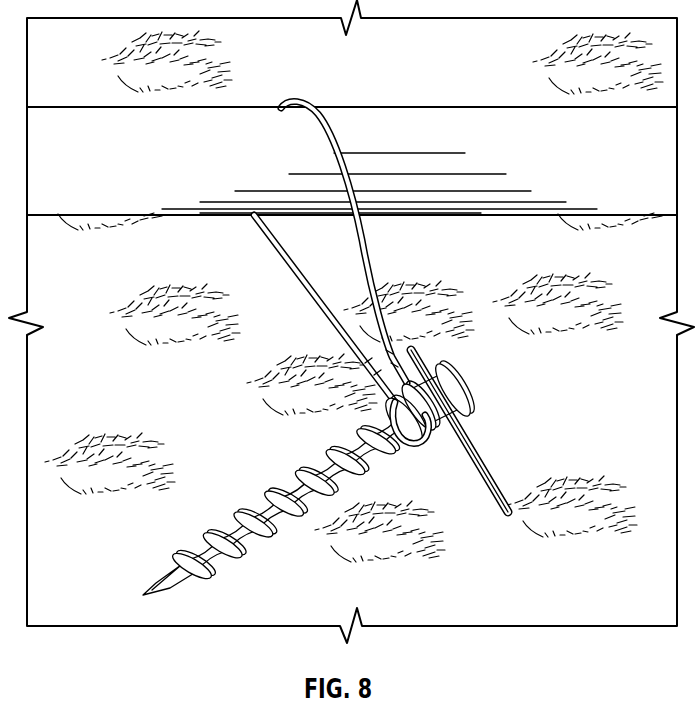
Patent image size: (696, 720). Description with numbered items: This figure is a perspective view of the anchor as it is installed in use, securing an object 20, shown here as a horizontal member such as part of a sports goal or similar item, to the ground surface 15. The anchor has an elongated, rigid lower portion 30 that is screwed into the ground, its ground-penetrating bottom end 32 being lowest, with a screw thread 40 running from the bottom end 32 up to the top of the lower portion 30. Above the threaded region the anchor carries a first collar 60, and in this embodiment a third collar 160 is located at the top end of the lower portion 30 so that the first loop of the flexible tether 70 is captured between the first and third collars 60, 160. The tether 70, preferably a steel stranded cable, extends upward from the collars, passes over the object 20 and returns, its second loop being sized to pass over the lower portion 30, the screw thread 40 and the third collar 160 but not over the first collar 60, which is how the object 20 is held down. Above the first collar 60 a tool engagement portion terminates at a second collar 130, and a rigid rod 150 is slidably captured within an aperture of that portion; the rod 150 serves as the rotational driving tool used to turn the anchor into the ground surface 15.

The ground surface 15 is at (72, 297).
The object 20 is at (477, 123).
The lower portion 30 is at (262, 540).
The bottom end 32 is at (143, 595).
The screw thread 40 is at (297, 487).
The first collar 60 is at (447, 435).
The tether 70 is at (371, 252).
The second collar 130 is at (450, 370).
The rigid rod 150 is at (480, 444).
The third collar 160 is at (412, 445).